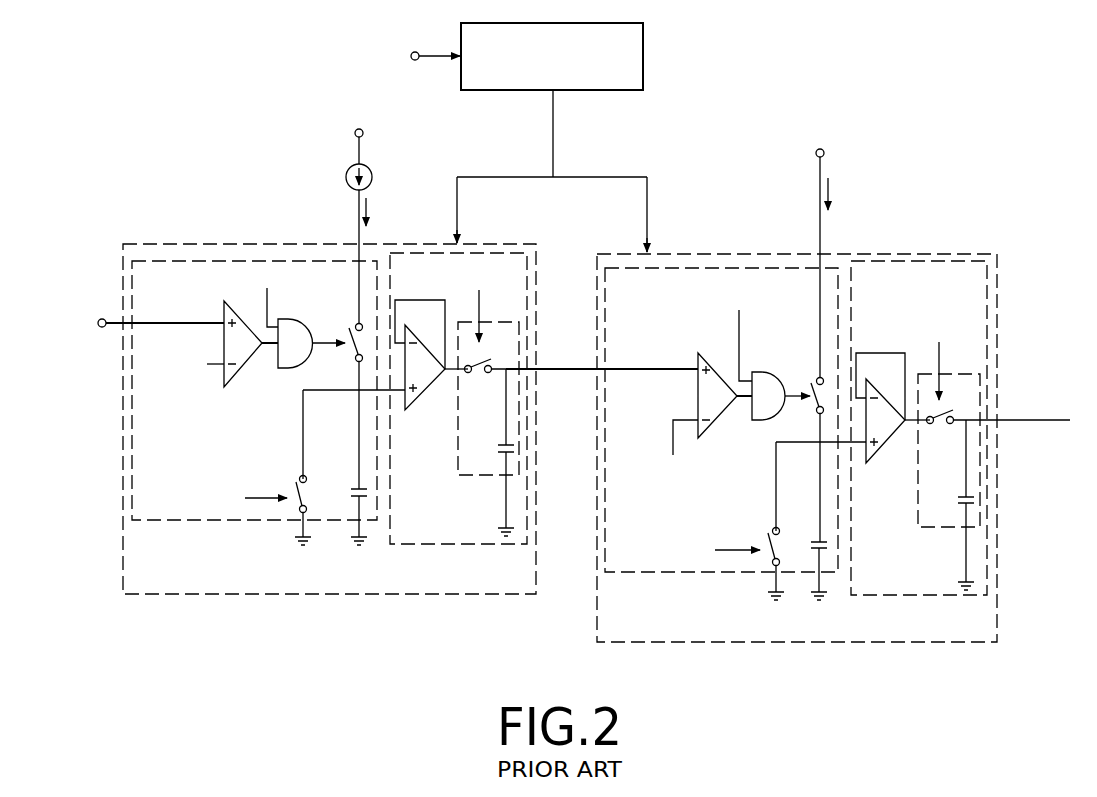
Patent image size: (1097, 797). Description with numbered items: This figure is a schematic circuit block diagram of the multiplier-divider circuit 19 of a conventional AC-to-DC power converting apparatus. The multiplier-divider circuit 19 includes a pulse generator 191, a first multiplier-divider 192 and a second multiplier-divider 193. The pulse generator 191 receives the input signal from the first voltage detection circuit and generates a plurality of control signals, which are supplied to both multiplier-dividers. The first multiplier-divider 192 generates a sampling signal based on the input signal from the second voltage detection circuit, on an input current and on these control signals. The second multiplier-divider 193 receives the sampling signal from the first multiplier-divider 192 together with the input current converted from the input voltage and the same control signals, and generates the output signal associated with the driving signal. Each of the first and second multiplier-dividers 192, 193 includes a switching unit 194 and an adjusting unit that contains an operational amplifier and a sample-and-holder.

The multiplier-divider circuit 19 is at (140, 182).
The pulse generator 191 is at (643, 66).
The first multiplier-divider 192 is at (287, 595).
The second multiplier-divider 193 is at (832, 643).
The switching unit 194 is at (335, 521).